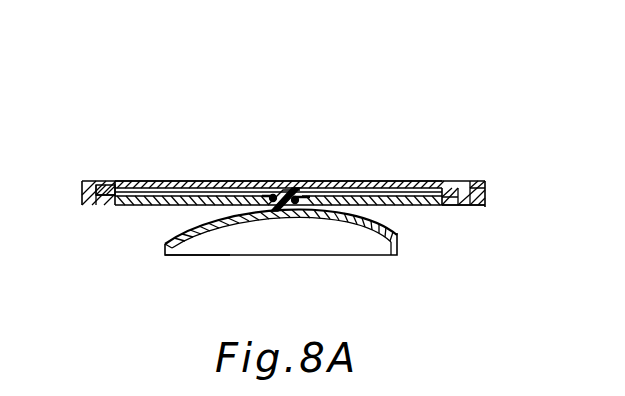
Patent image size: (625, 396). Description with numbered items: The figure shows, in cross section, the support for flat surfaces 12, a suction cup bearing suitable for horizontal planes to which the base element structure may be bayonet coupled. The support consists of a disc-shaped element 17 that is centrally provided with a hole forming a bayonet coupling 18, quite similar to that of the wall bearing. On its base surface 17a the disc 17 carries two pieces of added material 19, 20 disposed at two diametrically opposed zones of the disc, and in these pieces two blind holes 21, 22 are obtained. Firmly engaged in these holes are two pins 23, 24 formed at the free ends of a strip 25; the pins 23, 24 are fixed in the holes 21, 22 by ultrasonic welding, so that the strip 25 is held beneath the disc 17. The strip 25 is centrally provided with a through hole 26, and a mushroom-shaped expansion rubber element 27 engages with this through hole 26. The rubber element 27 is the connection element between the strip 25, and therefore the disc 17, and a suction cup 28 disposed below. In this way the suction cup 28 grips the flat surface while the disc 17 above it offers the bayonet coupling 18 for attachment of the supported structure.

The support for flat surfaces 12 is at (558, 395).
The disc-shaped element 17 is at (413, 181).
The base surface 17a is at (160, 181).
The bayonet coupling 18 is at (260, 181).
The piece of added material 19 is at (82, 203).
The piece of added material 20 is at (485, 205).
The blind hole 21 is at (128, 181).
The blind hole 22 is at (473, 181).
The pin 23 is at (107, 205).
The pin 24 is at (458, 207).
The strip 25 is at (167, 205).
The through hole 26 is at (303, 196).
The mushroom-shaped expansion rubber element 27 is at (292, 190).
The suction cup 28 is at (398, 236).